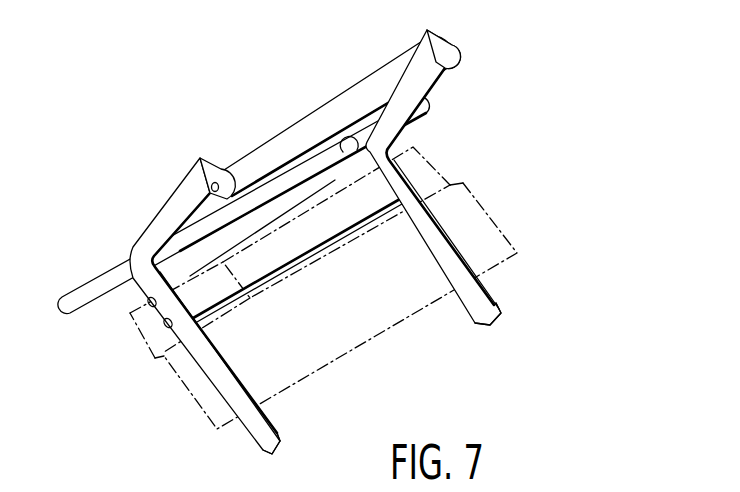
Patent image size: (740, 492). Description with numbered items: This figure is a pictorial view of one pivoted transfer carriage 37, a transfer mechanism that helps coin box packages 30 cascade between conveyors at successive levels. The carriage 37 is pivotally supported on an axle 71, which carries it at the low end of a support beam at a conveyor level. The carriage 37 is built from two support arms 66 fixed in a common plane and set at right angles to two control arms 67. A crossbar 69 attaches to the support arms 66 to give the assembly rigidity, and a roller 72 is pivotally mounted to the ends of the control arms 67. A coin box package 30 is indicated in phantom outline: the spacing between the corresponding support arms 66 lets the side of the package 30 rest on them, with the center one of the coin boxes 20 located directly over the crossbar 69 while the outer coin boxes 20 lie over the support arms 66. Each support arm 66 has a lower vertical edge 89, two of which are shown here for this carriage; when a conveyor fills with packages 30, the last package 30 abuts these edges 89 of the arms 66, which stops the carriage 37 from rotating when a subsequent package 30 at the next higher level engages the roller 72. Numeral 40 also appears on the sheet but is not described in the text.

The coin boxes 20 is at (373, 228).
The coin box package 30 is at (505, 237).
The transfer carriage 37 is at (571, 156).
The adjacent element 40 is at (661, 491).
The support arms 66 is at (258, 436).
The control arms 67 is at (207, 157).
The crossbar 69 is at (335, 178).
The axle 71 is at (90, 283).
The roller 72 is at (337, 94).
The lower vertical edge 89 is at (279, 448).